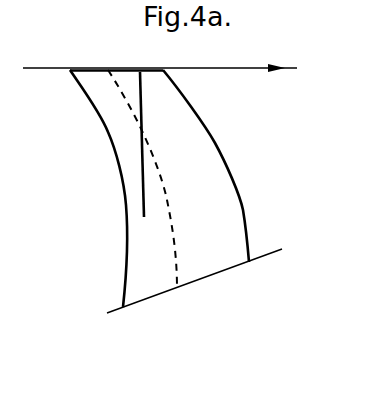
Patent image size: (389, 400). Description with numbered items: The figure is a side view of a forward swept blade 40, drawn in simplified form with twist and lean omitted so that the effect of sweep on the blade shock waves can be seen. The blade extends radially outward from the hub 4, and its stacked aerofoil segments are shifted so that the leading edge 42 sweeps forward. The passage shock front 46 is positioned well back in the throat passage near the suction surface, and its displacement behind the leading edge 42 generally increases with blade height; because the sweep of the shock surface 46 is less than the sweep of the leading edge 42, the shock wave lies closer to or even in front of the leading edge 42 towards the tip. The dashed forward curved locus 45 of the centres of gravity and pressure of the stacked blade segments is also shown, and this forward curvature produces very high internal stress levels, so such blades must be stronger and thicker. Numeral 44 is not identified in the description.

The hub 4 is at (123, 307).
The forward swept blade 40 is at (176, 188).
The leading edge 42 is at (127, 222).
The trailing edge 44 is at (243, 198).
The forward curved locus 45 is at (170, 190).
The passage shock front 46 is at (145, 104).